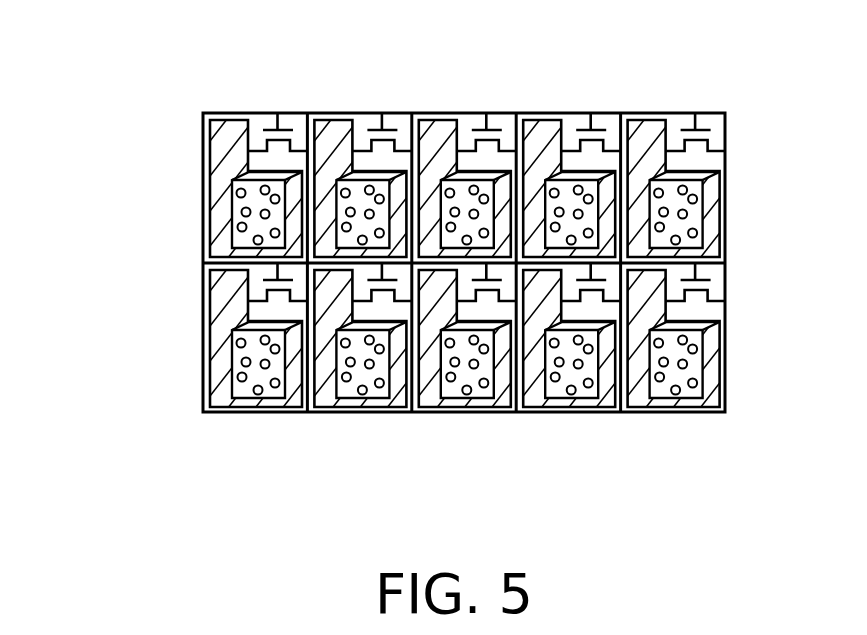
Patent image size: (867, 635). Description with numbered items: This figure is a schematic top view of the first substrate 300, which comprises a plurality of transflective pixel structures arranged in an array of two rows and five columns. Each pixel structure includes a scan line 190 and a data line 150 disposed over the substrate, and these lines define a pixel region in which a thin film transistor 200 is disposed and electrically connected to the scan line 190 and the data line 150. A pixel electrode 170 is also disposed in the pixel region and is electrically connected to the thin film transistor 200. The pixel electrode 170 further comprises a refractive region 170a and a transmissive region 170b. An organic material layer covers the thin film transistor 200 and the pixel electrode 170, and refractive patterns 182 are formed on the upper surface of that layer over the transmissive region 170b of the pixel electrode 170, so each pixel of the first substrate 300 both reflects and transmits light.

The data line 150 is at (486, 162).
The thin film transistor 200 is at (677, 122).
The scan line 190 is at (708, 113).
The refractive patterns 182 is at (225, 188).
The refractive region 170a is at (222, 212).
The transmissive region 170b is at (225, 243).
The pixel electrode 170 is at (429, 260).
The first substrate 300 is at (429, 246).